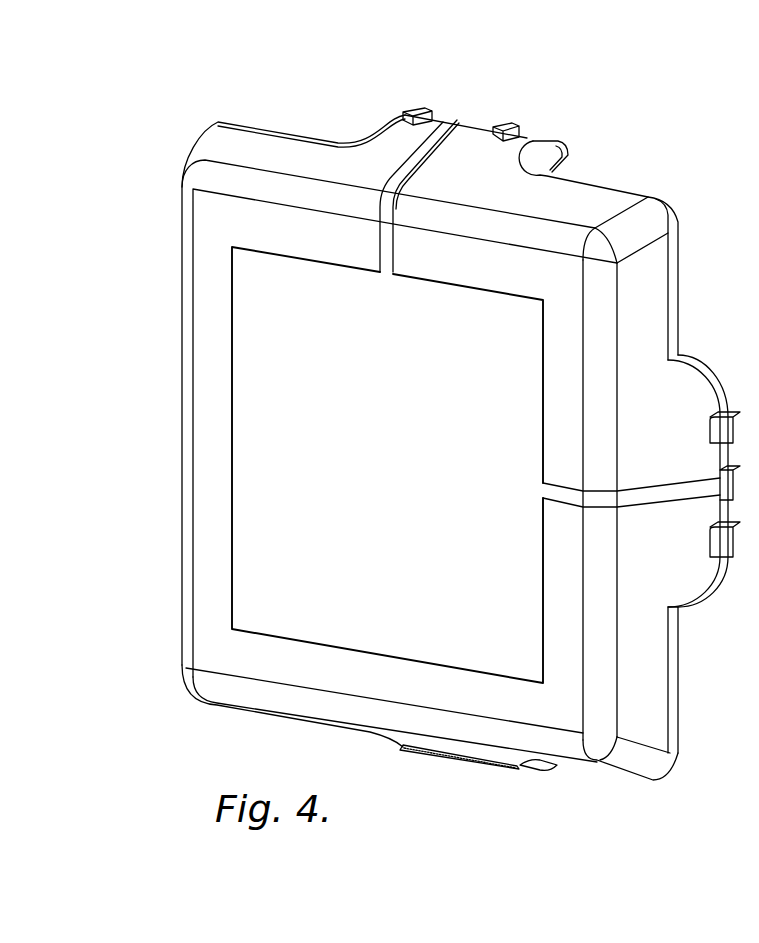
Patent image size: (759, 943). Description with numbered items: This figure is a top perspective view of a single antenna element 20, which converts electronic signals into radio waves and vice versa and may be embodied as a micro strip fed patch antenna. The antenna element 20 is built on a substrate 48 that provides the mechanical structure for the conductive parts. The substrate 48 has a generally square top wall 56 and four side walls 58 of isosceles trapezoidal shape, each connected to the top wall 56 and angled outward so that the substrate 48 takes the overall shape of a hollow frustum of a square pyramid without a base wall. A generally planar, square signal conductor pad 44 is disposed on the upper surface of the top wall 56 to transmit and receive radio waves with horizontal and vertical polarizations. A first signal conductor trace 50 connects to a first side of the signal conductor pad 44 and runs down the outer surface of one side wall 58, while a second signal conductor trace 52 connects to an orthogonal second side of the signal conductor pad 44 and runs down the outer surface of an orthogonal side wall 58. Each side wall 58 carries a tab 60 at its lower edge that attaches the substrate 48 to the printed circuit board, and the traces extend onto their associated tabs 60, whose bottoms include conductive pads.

The antenna element 20 is at (297, 122).
The signal conductor pad 44 is at (399, 464).
The substrate 48 is at (187, 690).
The first signal conductor trace 50 is at (445, 128).
The second signal conductor trace 52 is at (657, 497).
The top wall 56 is at (225, 222).
The side wall 58 is at (607, 208).
The tab 60 is at (572, 145).